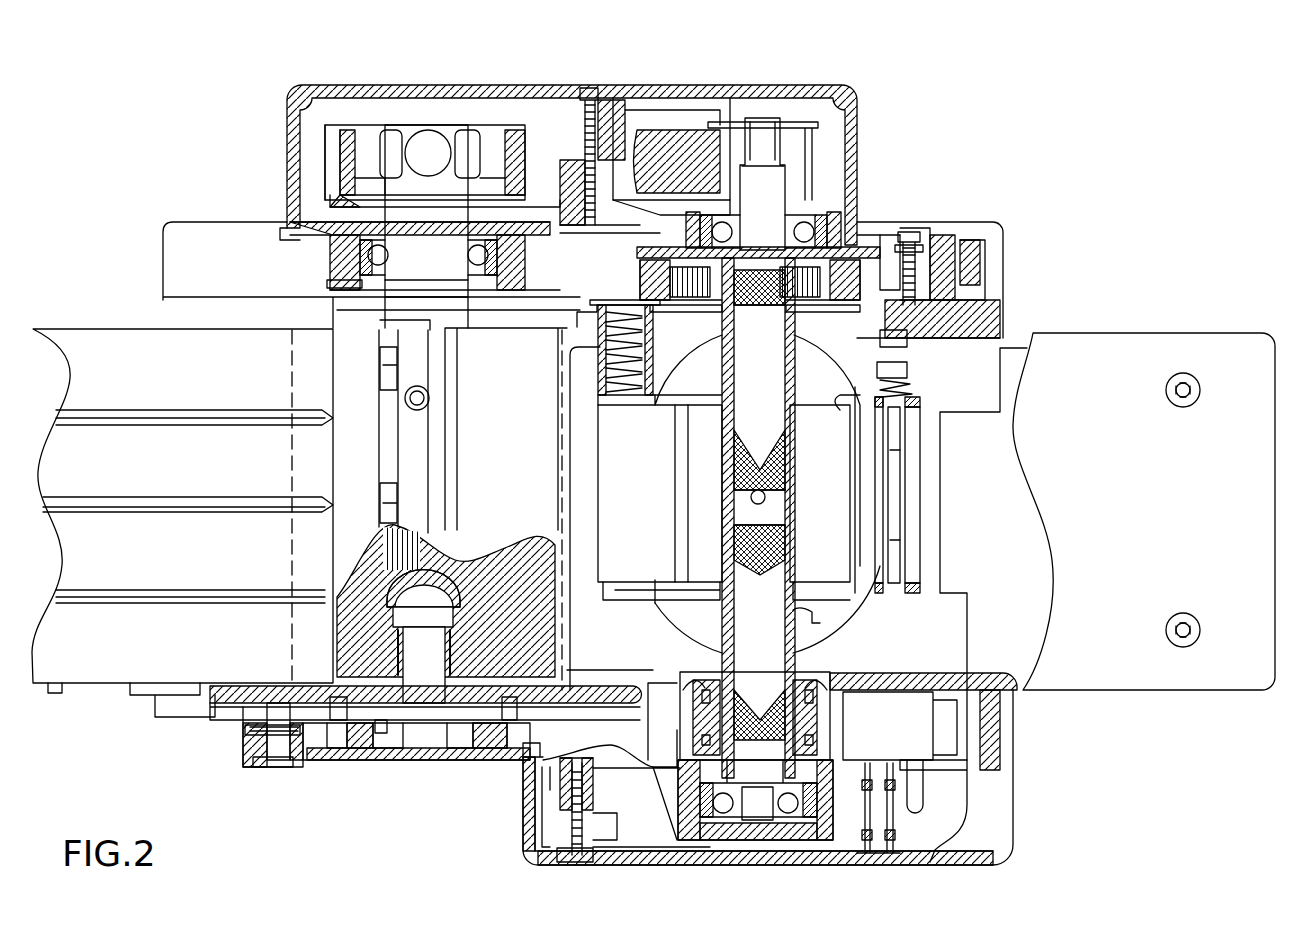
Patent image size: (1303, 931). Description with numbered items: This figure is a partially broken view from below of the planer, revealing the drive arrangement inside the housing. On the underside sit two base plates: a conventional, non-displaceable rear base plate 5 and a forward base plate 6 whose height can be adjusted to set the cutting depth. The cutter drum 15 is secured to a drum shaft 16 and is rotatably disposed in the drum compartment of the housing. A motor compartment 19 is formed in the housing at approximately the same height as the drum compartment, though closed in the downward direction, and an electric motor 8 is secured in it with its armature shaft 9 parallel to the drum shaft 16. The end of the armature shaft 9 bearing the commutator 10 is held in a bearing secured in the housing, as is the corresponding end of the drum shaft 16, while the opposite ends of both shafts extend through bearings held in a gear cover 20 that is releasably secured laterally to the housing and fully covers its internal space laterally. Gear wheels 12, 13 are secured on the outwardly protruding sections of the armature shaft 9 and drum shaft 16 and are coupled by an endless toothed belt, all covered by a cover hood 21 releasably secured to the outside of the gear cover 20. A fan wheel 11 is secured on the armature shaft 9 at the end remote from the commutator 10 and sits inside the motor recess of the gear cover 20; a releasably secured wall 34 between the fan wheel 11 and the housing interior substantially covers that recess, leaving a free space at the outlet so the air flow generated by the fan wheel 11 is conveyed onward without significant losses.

The rear base plate 5 is at (1110, 357).
The forward base plate 6 is at (128, 338).
The electric motor 8 is at (890, 238).
The armature shaft 9 is at (773, 633).
The commutator 10 is at (800, 712).
The fan wheel 11 is at (828, 440).
The gear wheel 12 is at (790, 145).
The gear wheel 13 is at (343, 133).
The cutter drum 15 is at (372, 710).
The drum shaft 16 is at (440, 210).
The motor compartment 19 is at (643, 615).
The gear cover 20 is at (980, 247).
The cover hood 21 is at (290, 160).
The wall 34 is at (646, 310).